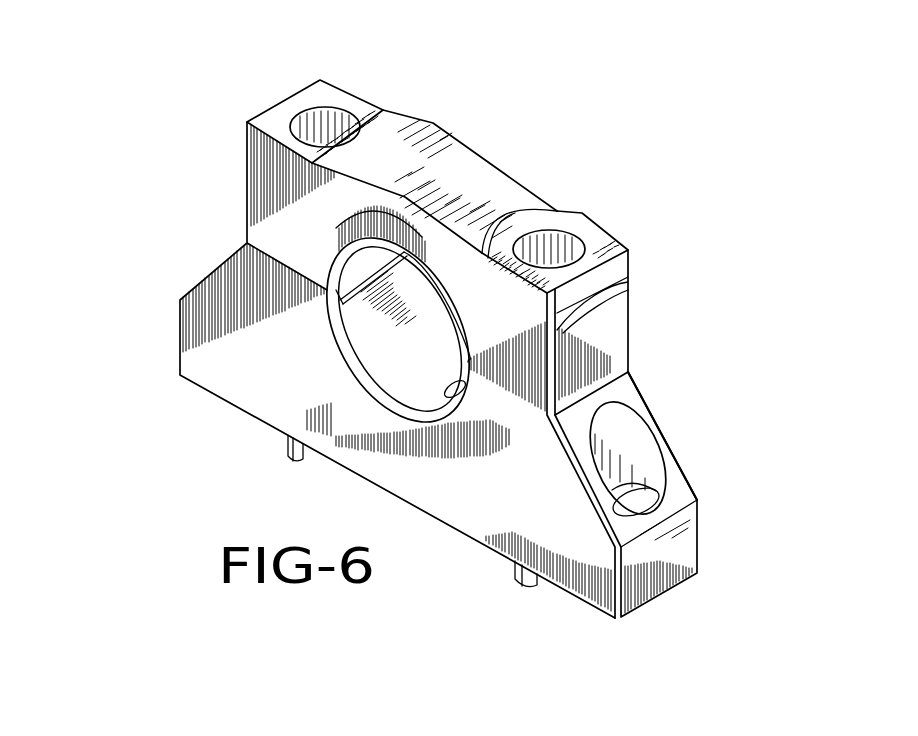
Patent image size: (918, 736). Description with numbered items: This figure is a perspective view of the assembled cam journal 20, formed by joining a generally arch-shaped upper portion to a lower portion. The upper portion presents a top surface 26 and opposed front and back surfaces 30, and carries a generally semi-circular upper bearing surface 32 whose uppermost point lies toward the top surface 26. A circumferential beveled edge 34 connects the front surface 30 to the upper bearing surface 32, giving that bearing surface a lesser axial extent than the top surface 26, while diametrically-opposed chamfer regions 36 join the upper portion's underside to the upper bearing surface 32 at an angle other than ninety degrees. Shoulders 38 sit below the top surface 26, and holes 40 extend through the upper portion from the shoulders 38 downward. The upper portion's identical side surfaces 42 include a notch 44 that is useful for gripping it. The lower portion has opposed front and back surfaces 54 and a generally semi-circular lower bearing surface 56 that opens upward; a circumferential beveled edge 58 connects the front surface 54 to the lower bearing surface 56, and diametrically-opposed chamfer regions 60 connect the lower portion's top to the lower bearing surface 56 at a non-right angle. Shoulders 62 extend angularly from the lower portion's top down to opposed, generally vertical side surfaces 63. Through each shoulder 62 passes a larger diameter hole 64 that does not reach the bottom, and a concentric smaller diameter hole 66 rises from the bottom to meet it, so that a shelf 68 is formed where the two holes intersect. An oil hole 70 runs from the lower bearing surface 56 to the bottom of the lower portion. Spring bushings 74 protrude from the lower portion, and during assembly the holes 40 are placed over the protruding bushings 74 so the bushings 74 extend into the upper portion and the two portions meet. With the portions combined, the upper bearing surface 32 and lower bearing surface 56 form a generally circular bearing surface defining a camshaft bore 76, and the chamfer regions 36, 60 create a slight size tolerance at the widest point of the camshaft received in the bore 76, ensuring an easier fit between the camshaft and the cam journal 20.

The cam journal 20 is at (176, 94).
The top surface 26 is at (458, 150).
The front and back surfaces 30 is at (263, 158).
The upper bearing surface 32 is at (357, 262).
The circumferential beveled edge 34 is at (350, 226).
The chamfer regions 36 is at (336, 290).
The shoulders 38 is at (338, 97).
The holes 40 is at (310, 120).
The side surfaces 42 is at (614, 331).
The notch 44 is at (600, 300).
The front and back surfaces 54 is at (477, 508).
The lower bearing surface 56 is at (380, 358).
The circumferential beveled edge 58 is at (340, 324).
The chamfer regions 60 is at (370, 278).
The shoulders 62 is at (678, 495).
The side surfaces 63 is at (678, 573).
The larger diameter hole 64 is at (634, 440).
The smaller diameter hole 66 is at (642, 507).
The shelf 68 is at (644, 489).
The oil hole 70 is at (465, 389).
The spring bushings 74 is at (290, 444).
The camshaft bore 76 is at (430, 300).